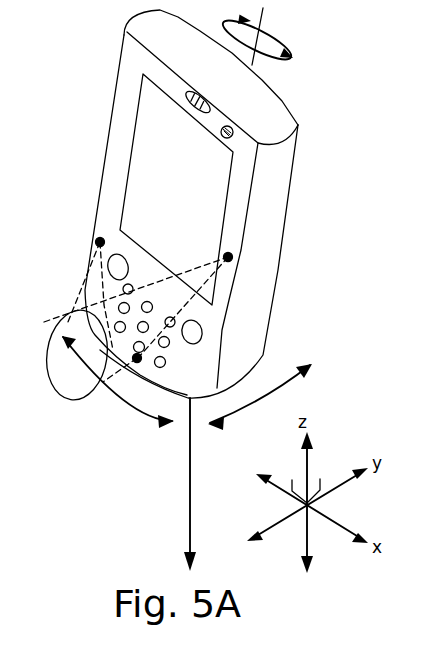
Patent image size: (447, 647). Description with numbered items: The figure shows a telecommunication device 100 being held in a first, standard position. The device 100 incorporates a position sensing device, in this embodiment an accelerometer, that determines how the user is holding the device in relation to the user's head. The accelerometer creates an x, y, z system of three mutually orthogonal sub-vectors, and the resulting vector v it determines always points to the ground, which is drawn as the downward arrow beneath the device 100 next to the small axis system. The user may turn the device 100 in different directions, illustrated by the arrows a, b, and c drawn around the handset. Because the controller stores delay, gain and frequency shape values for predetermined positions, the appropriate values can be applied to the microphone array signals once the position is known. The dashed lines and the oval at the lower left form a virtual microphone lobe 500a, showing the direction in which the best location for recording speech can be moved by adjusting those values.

The telecommunication device 100 is at (130, 88).
The virtual microphone lobe 500a is at (68, 398).
The arrow a is at (118, 382).
The arrow b is at (260, 397).
The arrow c is at (256, 33).
The resulting vector v is at (186, 484).